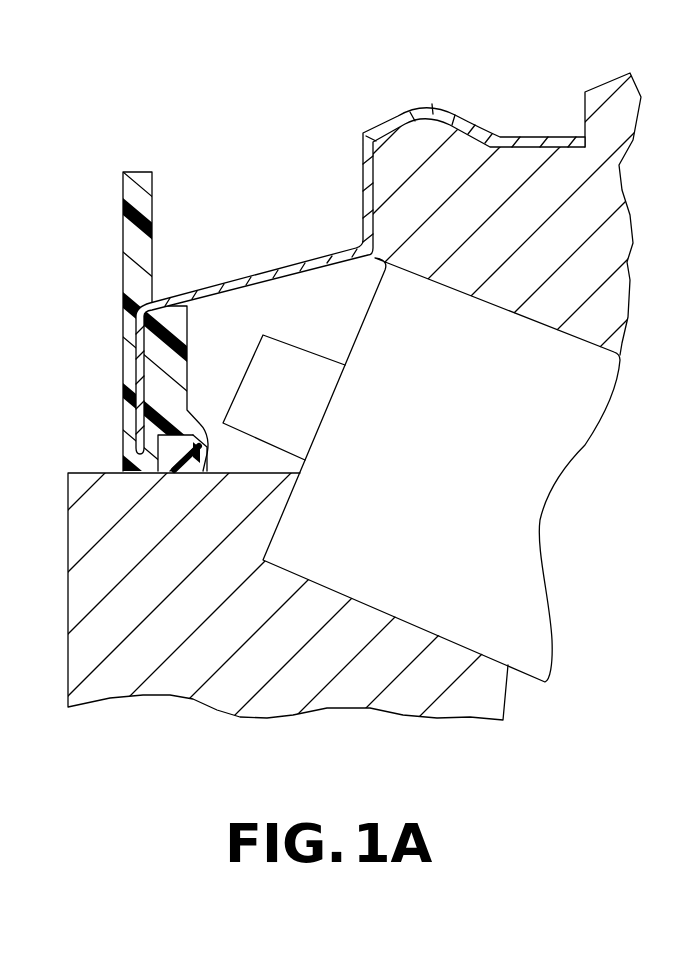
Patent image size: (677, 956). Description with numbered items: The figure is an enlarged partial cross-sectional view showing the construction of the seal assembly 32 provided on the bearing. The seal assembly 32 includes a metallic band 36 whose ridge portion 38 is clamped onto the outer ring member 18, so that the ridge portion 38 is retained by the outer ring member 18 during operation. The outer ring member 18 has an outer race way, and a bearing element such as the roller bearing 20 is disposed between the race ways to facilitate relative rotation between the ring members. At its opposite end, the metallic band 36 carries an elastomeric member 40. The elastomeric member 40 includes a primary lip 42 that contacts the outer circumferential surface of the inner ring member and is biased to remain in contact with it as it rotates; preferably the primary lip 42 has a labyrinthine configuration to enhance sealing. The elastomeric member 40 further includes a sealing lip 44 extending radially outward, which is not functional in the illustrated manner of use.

The outer ring member 18 is at (620, 74).
The roller bearing 20 is at (441, 498).
The seal assembly 32 is at (266, 121).
The metallic band 36 is at (272, 270).
The ridge portion 38 is at (441, 106).
The elastomeric member 40 is at (123, 401).
The primary lip 42 is at (207, 440).
The sealing lip 44 is at (123, 222).